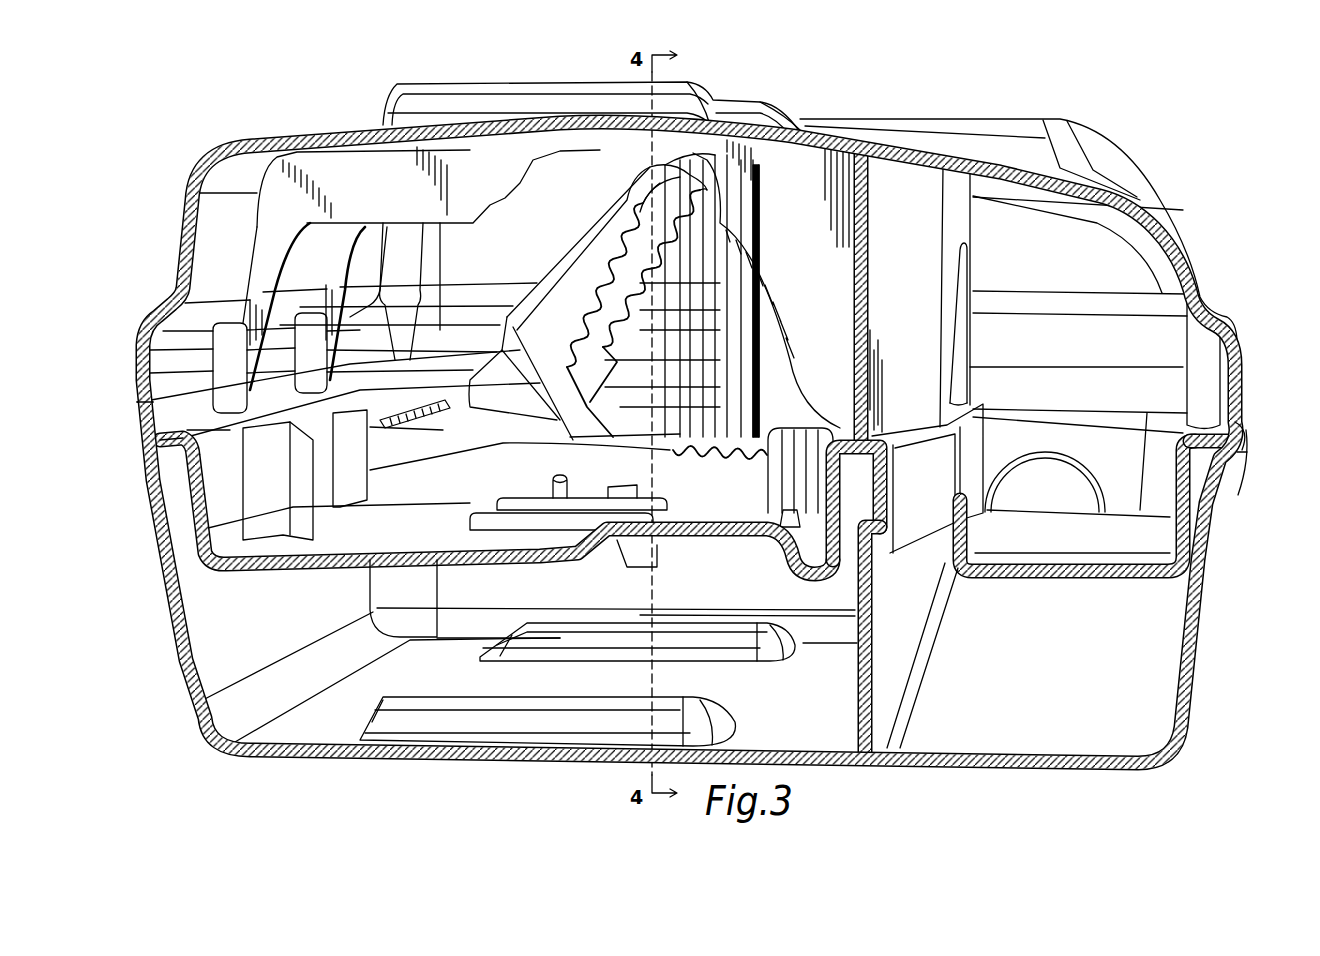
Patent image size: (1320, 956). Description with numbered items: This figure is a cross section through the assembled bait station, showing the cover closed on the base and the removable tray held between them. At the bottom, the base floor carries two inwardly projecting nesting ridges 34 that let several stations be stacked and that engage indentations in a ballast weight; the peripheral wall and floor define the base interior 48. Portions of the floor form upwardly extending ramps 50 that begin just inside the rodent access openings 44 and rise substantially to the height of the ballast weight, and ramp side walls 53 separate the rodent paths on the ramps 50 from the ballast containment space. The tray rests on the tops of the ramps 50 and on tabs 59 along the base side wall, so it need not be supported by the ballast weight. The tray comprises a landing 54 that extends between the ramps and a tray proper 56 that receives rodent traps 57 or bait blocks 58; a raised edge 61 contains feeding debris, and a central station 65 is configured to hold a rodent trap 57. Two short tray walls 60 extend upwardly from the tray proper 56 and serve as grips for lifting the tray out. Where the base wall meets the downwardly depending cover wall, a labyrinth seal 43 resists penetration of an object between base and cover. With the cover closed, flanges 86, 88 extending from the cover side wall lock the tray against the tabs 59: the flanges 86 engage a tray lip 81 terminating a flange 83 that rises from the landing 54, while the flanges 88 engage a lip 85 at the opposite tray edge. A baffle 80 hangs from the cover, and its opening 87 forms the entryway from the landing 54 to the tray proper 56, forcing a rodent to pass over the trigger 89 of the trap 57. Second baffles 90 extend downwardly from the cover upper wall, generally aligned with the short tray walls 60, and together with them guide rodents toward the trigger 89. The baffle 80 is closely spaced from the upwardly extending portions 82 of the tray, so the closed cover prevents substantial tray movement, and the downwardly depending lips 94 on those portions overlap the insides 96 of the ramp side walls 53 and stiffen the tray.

The nesting ridges 34 is at (700, 623).
The labyrinth seal 43 is at (137, 412).
The rodent access openings 44 is at (1020, 460).
The base interior 48 is at (375, 655).
The ramps 50 is at (1065, 666).
The ramp side walls 53 is at (885, 690).
The landing 54 is at (1022, 562).
The tray proper 56 is at (428, 560).
The rodent trap 57 is at (552, 272).
The bait blocks 58 is at (750, 346).
The tabs 59 is at (1232, 480).
The short tray walls 60 is at (818, 430).
The raised edge 61 is at (203, 510).
The central station 65 is at (297, 558).
The baffle 80 is at (893, 428).
The tray lip 81 is at (1240, 455).
The upwardly extending portions 82 is at (913, 440).
The flange 83 is at (1195, 528).
The lip 85 is at (167, 455).
The flanges 86 is at (1219, 392).
The opening 87 is at (957, 343).
The flanges 88 is at (245, 374).
The trigger 89 is at (667, 448).
The second baffles 90 is at (812, 229).
The downwardly depending lips 94 is at (908, 535).
The insides 96 is at (909, 628).